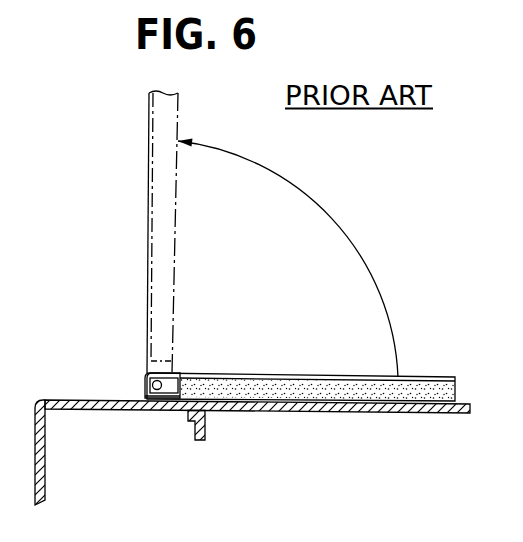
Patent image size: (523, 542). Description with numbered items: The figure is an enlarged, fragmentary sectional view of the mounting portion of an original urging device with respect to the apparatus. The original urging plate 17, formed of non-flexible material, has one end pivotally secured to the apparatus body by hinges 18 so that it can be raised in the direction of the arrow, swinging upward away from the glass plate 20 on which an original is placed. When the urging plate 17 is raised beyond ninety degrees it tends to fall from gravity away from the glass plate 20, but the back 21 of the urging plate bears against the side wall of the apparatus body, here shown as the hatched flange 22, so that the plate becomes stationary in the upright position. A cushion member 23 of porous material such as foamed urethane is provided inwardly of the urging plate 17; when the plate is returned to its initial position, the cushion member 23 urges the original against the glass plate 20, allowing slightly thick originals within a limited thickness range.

The original urging plate 17 is at (331, 375).
The hinges 18 is at (157, 390).
The glass plate 20 is at (330, 413).
The back of the urging plate 21 is at (143, 385).
The flange 22 is at (62, 398).
The cushion member 23 is at (427, 390).